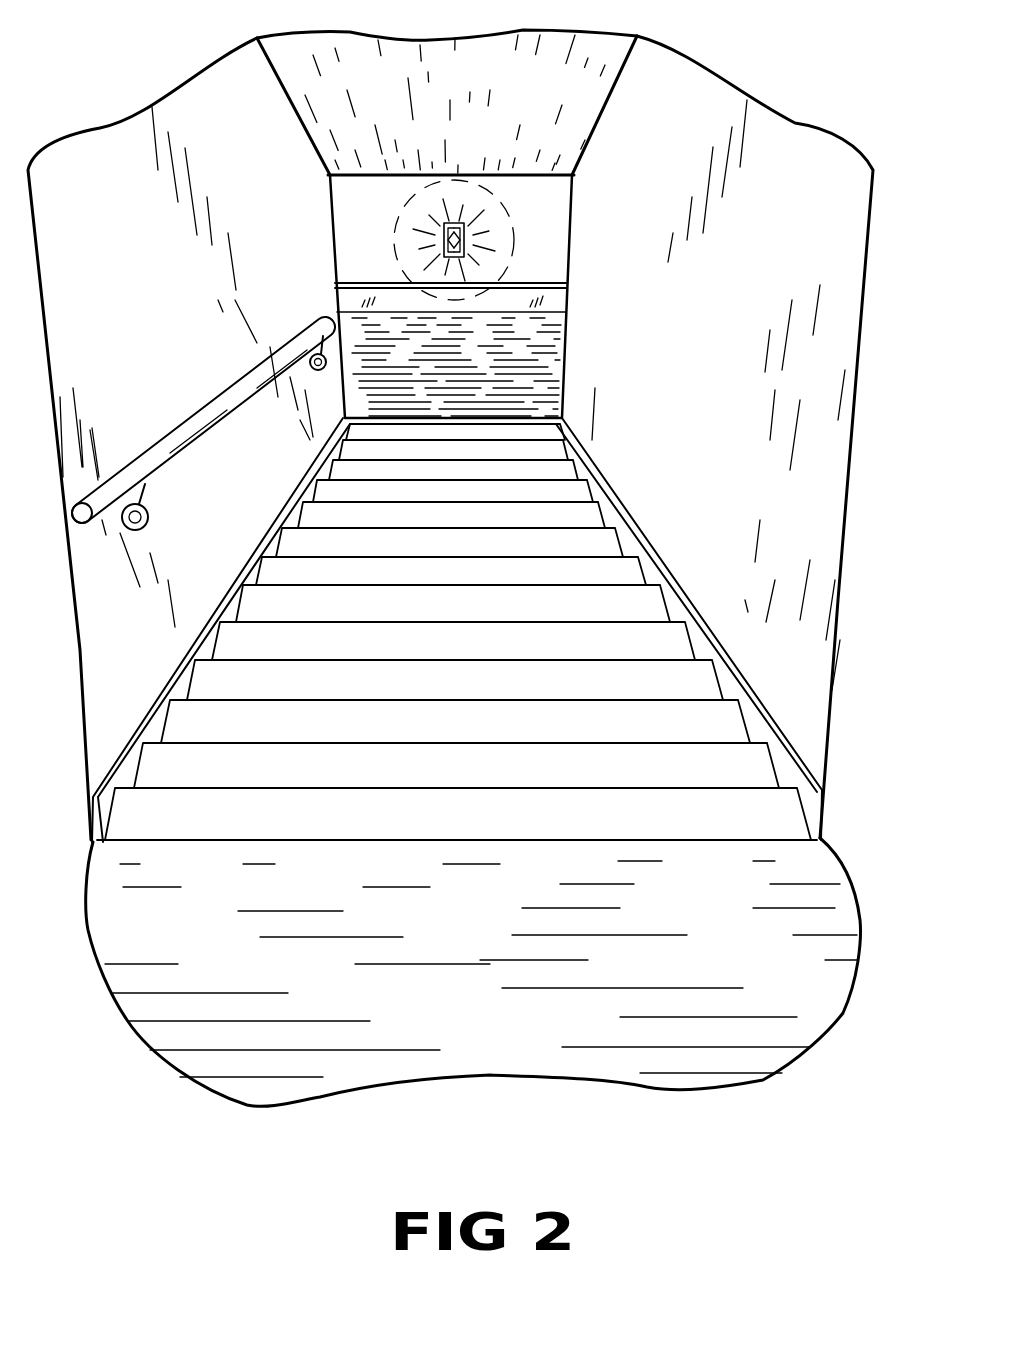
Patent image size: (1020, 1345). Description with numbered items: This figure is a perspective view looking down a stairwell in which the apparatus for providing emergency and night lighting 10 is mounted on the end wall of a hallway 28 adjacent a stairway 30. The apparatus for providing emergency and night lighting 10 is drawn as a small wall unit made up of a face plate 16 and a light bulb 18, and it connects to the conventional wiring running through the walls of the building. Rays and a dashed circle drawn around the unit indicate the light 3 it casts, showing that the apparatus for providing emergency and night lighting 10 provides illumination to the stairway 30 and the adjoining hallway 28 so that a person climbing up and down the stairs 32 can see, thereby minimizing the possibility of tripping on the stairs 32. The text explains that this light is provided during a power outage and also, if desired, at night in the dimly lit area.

The light illumination pattern 3 is at (384, 216).
The apparatus for providing emergency and night lighting 10 is at (457, 233).
The face plate 16 is at (466, 238).
The light bulb 18 is at (443, 238).
The hallway 28 is at (352, 232).
The stairway 30 is at (692, 95).
The stairs 32 is at (720, 723).